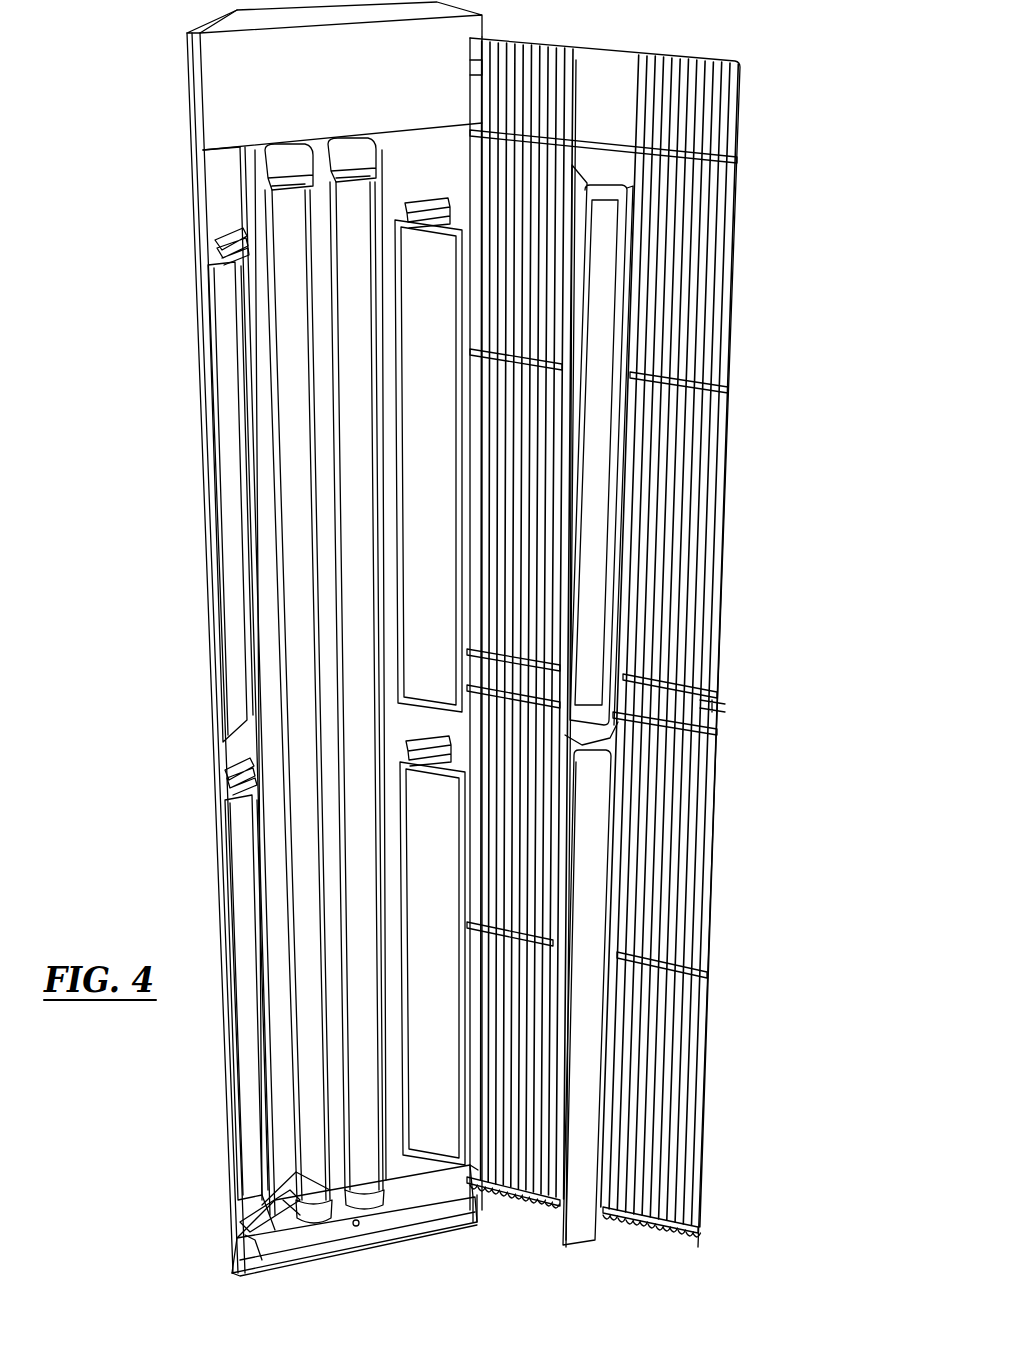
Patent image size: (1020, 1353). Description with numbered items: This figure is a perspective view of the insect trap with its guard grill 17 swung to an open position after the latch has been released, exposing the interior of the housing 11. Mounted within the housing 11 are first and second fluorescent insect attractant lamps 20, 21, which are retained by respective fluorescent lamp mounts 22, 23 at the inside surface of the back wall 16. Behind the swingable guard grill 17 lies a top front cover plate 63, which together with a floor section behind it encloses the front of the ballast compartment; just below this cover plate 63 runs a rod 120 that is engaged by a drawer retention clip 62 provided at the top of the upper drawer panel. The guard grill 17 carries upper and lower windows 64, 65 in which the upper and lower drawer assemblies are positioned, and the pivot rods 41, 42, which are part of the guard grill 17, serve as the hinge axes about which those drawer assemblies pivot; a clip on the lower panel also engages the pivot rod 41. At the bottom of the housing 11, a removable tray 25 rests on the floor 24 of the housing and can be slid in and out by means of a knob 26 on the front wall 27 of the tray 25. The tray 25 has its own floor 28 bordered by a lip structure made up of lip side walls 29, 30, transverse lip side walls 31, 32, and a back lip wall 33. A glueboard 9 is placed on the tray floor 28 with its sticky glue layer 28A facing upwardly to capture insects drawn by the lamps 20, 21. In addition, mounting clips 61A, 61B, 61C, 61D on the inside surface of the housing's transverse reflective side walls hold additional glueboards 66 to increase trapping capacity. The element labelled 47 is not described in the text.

The glueboard 9 is at (283, 1200).
The housing 11 is at (188, 555).
The back wall 16 is at (247, 165).
The guard grill 17 is at (732, 572).
The first fluorescent insect attractant lamp 20 is at (290, 345).
The second fluorescent insect attractant lamp 21 is at (352, 420).
The fluorescent lamp mount 22 is at (267, 212).
The fluorescent lamp mount 23 is at (290, 197).
The floor 24 is at (472, 1205).
The removable tray 25 is at (410, 1218).
The knob 26 is at (356, 1227).
The front wall 27 is at (383, 1222).
The floor 28 is at (240, 1222).
The sticky glue layer 28A is at (285, 1172).
The lip side wall 29 is at (232, 1262).
The lip side wall 30 is at (455, 1162).
The transverse lip side wall 31 is at (245, 1235).
The transverse lip side wall 32 is at (400, 1178).
The back lip wall 33 is at (262, 1195).
The pivot rod 41 is at (462, 688).
The pivot rod 42 is at (598, 1232).
The door rail 47 is at (606, 256).
The mounting clip 61A is at (428, 200).
The mounting clip 61B is at (429, 762).
The mounting clip 61C is at (212, 240).
The mounting clip 61D is at (233, 770).
The drawer retention clip 62 is at (600, 160).
The top front cover plate 63 is at (236, 84).
The upper window 64 is at (625, 343).
The lower window 65 is at (612, 850).
The additional glueboard 66 is at (225, 605).
The rod 120 is at (600, 145).